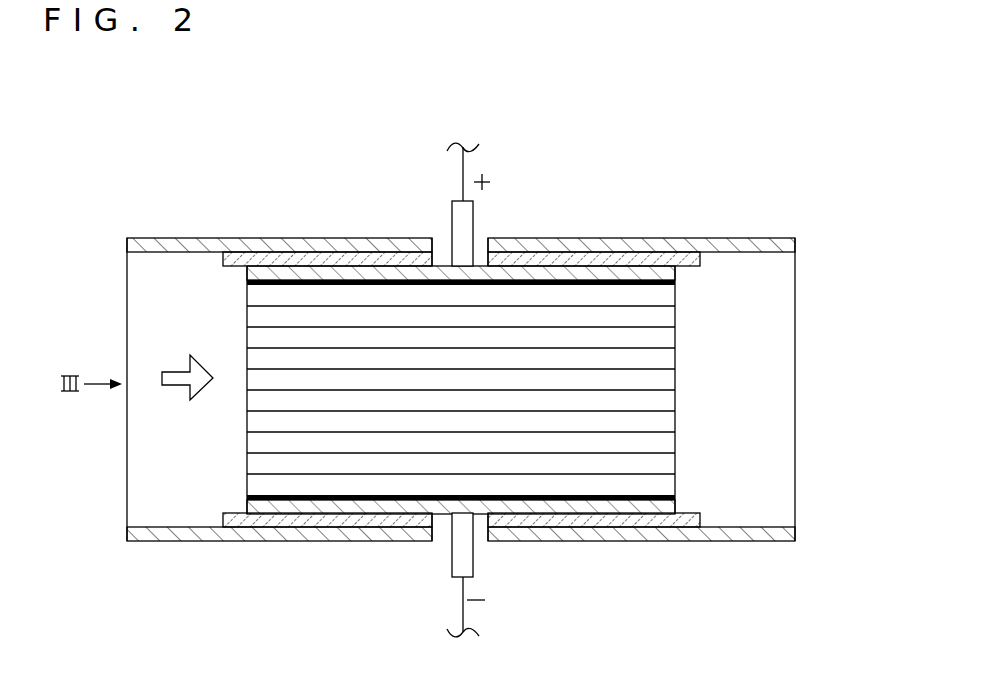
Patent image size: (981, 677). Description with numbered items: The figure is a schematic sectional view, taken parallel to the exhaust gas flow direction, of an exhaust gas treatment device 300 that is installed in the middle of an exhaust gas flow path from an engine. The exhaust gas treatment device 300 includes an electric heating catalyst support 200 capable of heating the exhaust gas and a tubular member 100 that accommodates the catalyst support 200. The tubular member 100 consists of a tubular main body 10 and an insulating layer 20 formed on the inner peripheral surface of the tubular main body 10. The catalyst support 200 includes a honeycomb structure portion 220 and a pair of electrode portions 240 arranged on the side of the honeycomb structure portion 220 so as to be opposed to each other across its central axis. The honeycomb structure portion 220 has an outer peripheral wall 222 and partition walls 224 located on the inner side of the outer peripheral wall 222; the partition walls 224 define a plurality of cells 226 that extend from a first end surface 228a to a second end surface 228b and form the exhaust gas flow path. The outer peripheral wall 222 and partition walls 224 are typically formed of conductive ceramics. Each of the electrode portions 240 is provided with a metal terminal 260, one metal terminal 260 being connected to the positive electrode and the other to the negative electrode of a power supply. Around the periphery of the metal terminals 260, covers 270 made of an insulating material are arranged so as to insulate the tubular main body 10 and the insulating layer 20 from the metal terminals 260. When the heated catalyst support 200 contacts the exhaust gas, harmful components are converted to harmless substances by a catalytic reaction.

The exhaust gas treatment device 300 is at (782, 119).
The tubular member 100 is at (272, 222).
The tubular main body 10 is at (311, 244).
The insulating layer 20 is at (350, 258).
The electric heating catalyst support 200 is at (845, 520).
The honeycomb structure portion 220 is at (688, 440).
The outer peripheral wall 222 is at (596, 278).
The partition walls 224 is at (607, 432).
The cells 226 is at (635, 415).
The first end surface 228a is at (247, 333).
The second end surface 228b is at (677, 338).
The electrode portions 240 is at (676, 274).
The metal terminals 260 is at (467, 212).
The covers 270 is at (481, 240).